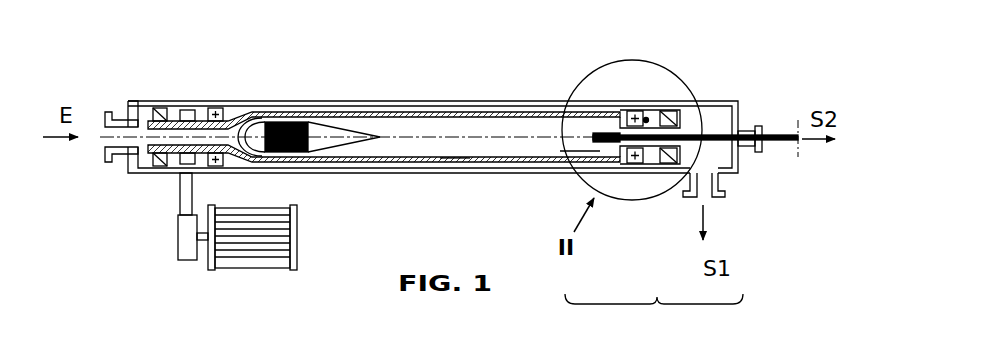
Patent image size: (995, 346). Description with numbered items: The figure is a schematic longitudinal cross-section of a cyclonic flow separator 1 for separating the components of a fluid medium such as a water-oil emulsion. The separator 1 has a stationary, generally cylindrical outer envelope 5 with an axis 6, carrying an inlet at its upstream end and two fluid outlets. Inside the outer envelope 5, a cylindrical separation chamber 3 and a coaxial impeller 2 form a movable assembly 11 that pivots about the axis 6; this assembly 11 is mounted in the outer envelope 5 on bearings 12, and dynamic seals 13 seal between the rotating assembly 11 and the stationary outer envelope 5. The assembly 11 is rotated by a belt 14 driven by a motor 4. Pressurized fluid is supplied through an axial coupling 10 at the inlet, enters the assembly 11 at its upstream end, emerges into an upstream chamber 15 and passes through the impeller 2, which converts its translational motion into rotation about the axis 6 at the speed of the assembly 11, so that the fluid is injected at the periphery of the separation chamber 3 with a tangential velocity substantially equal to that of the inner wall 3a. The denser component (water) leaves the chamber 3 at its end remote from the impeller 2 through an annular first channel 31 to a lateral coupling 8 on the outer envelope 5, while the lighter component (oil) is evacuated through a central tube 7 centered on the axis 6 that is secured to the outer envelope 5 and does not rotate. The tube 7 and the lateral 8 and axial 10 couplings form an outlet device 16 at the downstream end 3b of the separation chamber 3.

The separator 1 is at (499, 68).
The impeller 2 is at (289, 120).
The separation chamber 3 is at (598, 125).
The inner wall 3a is at (458, 160).
The downstream end 3b is at (576, 154).
The motor 4 is at (258, 242).
The outer envelope 5 is at (399, 102).
The axis 6 is at (130, 100).
The tube 7 is at (767, 134).
The lateral coupling 8 is at (721, 186).
The axial coupling 10 is at (117, 117).
The assembly 11 is at (438, 113).
The bearings 12 is at (220, 110).
The dynamic seals 13 is at (162, 110).
The belt 14 is at (186, 194).
The upstream chamber 15 is at (244, 115).
The outlet device 16 is at (654, 224).
The annular first channel 31 is at (646, 118).